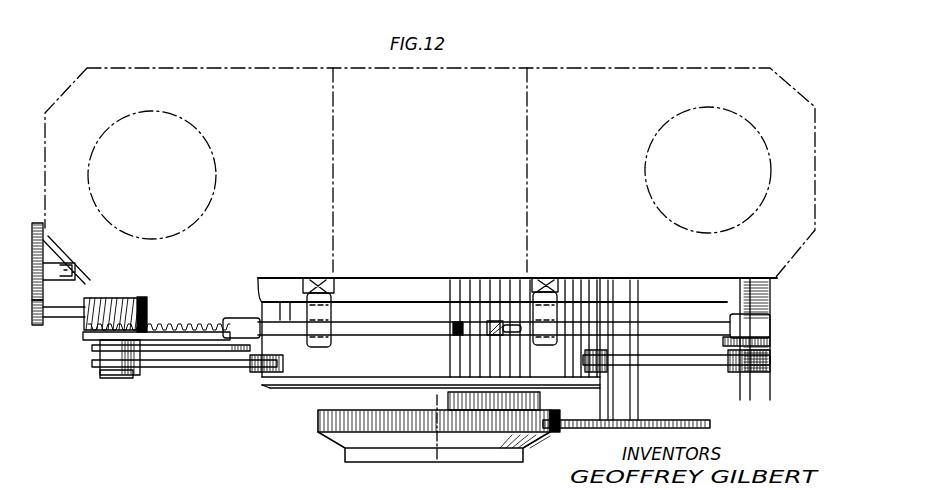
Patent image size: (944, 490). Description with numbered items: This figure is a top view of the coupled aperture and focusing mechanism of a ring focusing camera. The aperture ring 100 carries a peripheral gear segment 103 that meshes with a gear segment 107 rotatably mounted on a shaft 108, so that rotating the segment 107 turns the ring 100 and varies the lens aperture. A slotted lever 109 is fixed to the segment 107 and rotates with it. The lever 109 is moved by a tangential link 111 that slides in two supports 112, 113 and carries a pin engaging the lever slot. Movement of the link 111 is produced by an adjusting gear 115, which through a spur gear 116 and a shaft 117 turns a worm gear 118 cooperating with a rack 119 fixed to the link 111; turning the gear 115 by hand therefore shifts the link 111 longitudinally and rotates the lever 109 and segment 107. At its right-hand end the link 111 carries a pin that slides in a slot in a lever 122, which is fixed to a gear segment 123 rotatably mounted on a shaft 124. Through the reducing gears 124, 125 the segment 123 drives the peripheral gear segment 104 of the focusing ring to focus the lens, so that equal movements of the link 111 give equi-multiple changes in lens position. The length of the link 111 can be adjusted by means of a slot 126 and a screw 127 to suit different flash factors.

The aperture ring 100 is at (292, 388).
The peripheral gear segment 103 is at (252, 372).
The peripheral gear segment 104 is at (552, 412).
The gear segment 107 is at (186, 368).
The shaft 108 is at (108, 378).
The lever 109 is at (146, 351).
The tangential link 111 is at (352, 322).
The support 112 is at (312, 310).
The support 113 is at (556, 310).
The adjusting gear 115 is at (40, 240).
The spur gear 116 is at (42, 325).
The shaft 117 is at (66, 310).
The worm gear 118 is at (104, 300).
The rack 119 is at (152, 324).
The lever 122 is at (772, 342).
The gear segment 123 is at (705, 366).
The shaft and reducing gear 124 is at (615, 368).
The reducing gear 125 is at (700, 420).
The slot 126 is at (512, 325).
The screw 127 is at (492, 321).